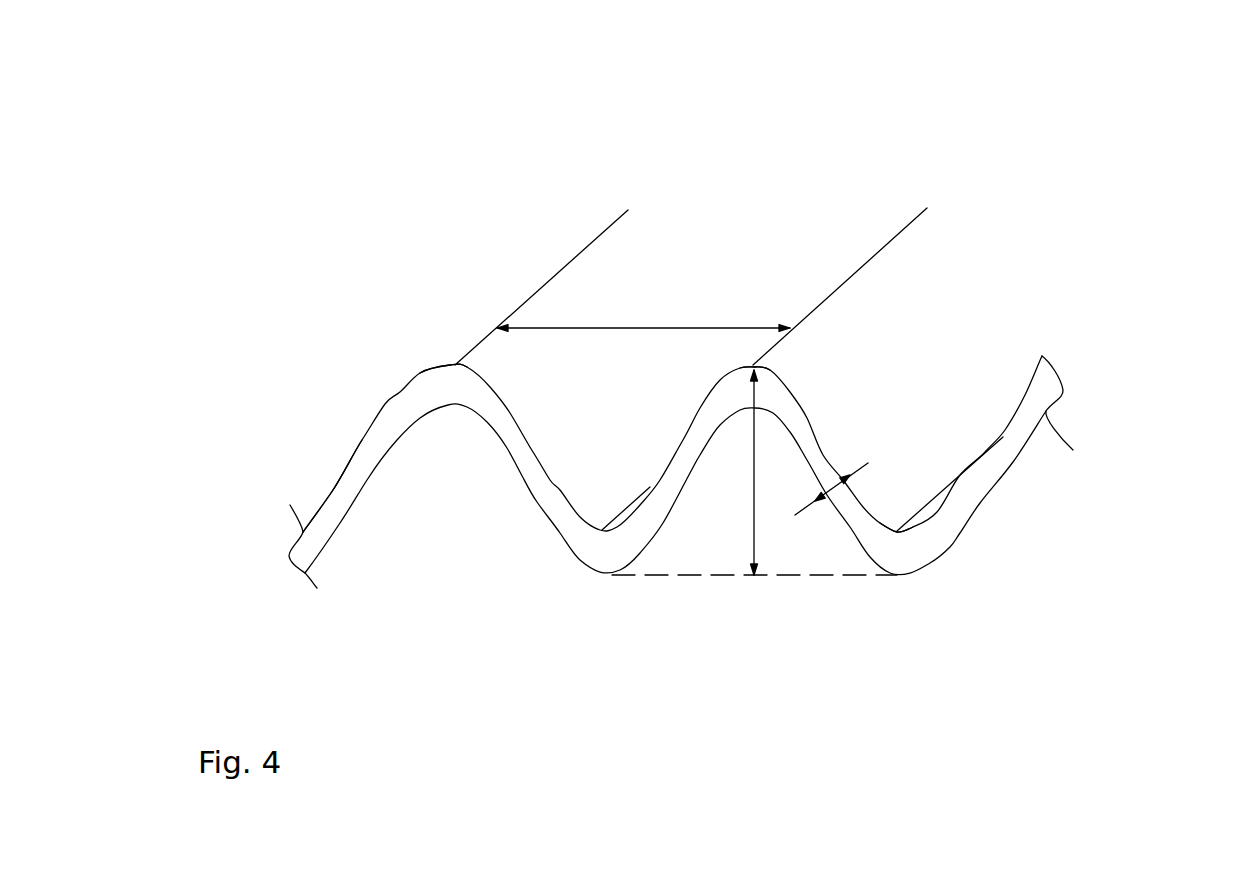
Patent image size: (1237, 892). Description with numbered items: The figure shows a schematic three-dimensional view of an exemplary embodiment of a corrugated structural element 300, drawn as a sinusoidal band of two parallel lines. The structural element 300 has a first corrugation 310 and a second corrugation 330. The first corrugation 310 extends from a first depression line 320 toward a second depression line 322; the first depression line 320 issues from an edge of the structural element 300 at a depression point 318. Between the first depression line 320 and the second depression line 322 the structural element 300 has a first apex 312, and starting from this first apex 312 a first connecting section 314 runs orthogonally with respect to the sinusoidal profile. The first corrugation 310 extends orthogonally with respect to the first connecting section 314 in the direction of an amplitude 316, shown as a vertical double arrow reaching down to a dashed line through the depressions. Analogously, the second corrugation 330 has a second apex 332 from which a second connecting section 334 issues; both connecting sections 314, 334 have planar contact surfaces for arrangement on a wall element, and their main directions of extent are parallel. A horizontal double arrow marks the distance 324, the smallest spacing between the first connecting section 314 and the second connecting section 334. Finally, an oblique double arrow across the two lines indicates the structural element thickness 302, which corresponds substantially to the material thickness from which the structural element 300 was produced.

The corrugated structural element 300 is at (1103, 232).
The structural element thickness 302 is at (837, 490).
The first corrugation 310 is at (945, 250).
The first apex 312 is at (757, 365).
The first connecting section 314 is at (882, 247).
The amplitude 316 is at (750, 530).
The depression point 318 is at (900, 533).
The first depression line 320 is at (957, 473).
The second depression line 322 is at (602, 530).
The distance 324 is at (672, 327).
The second corrugation 330 is at (373, 380).
The second apex 332 is at (455, 363).
The second connecting section 334 is at (562, 268).